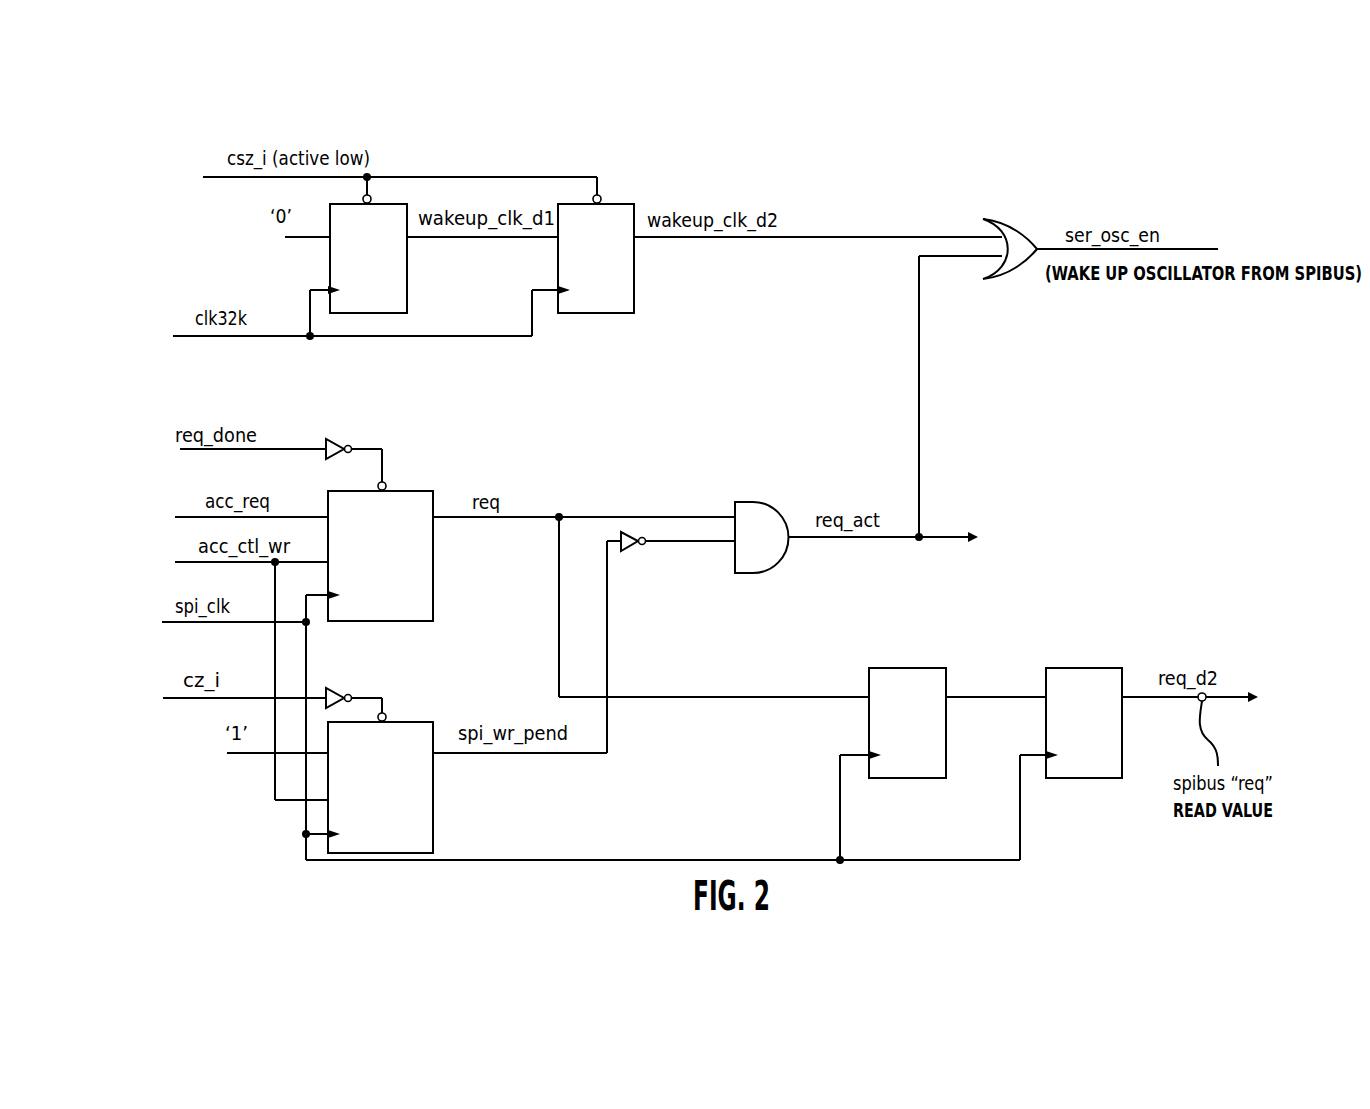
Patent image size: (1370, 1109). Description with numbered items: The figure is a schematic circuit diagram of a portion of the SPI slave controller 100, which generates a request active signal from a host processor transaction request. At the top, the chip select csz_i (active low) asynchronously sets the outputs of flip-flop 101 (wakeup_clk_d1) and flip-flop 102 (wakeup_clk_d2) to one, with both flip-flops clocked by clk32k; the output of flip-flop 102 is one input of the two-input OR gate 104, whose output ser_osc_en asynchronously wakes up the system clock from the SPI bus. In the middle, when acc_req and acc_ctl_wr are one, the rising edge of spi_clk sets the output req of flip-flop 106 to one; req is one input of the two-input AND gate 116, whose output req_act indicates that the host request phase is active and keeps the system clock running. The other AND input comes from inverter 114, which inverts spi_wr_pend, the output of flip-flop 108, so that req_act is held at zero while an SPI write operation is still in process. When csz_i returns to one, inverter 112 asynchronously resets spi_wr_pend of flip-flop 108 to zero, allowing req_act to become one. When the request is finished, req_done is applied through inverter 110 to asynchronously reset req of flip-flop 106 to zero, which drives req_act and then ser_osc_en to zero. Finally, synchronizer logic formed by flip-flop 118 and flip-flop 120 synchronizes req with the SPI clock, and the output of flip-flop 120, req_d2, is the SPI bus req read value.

The SPI slave controller 100 is at (226, 100).
The flip-flop 101 is at (397, 204).
The flip-flop 102 is at (623, 204).
The OR gate 104 is at (1003, 226).
The flip-flop 106 is at (404, 491).
The flip-flop 108 is at (395, 722).
The inverter 110 is at (332, 440).
The inverter 112 is at (332, 689).
The inverter 114 is at (625, 533).
The AND gate 116 is at (745, 502).
The flip-flop 118 is at (905, 778).
The flip-flop 120 is at (1092, 778).